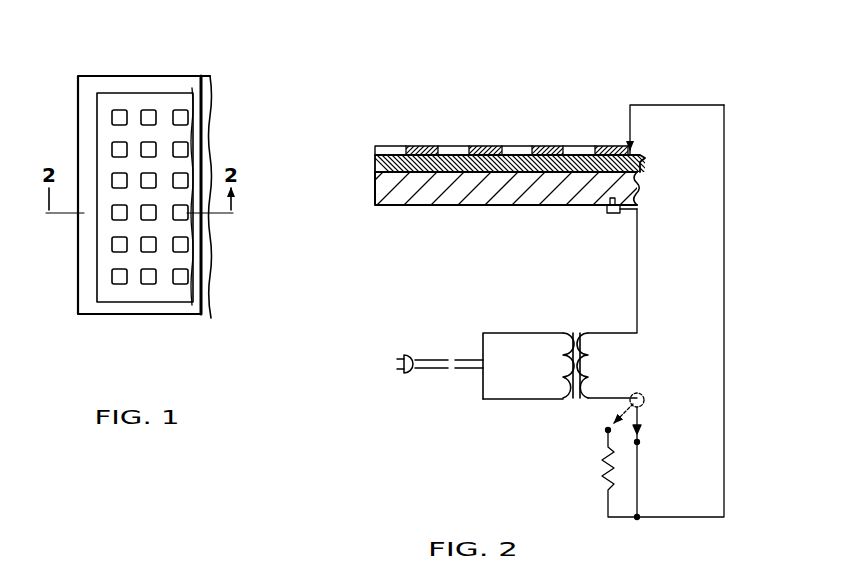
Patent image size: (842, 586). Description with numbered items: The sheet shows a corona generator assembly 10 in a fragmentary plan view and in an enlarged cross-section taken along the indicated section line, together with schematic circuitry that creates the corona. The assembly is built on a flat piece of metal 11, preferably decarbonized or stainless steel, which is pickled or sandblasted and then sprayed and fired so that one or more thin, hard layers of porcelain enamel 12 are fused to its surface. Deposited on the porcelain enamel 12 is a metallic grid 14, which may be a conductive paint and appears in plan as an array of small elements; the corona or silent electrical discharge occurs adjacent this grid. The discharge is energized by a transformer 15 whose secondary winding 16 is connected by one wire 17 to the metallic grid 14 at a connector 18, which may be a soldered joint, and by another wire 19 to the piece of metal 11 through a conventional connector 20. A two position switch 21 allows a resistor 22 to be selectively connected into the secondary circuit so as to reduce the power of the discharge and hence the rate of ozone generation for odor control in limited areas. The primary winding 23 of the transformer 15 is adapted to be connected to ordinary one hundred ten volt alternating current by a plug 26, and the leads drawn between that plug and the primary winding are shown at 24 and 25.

In FIG. 1, the corona generator assembly 10 is at (155, 188).
In FIG. 2, the corona generator assembly 10 is at (489, 161).
In FIG. 1, the flat piece of metal 11 is at (210, 305).
In FIG. 2, the flat piece of metal 11 is at (400, 200).
In FIG. 1, the porcelain enamel 12 is at (177, 310).
In FIG. 2, the porcelain enamel 12 is at (375, 158).
In FIG. 1, the metallic grid 14 is at (182, 132).
In FIG. 2, the metallic grid 14 is at (487, 146).
In FIG. 2, the transformer 15 is at (573, 406).
In FIG. 2, the secondary winding 16 is at (597, 358).
In FIG. 2, the wire 17 is at (726, 242).
In FIG. 2, the connector 18 is at (628, 148).
In FIG. 2, the wire 19 is at (638, 273).
In FIG. 2, the connector 20 is at (607, 208).
In FIG. 2, the two position switch 21 is at (643, 397).
In FIG. 2, the resistor 22 is at (603, 480).
In FIG. 2, the primary winding 23 is at (557, 360).
In FIG. 2, the conductor 24 is at (507, 400).
In FIG. 2, the conductor 25 is at (507, 330).
In FIG. 2, the plug 26 is at (410, 355).